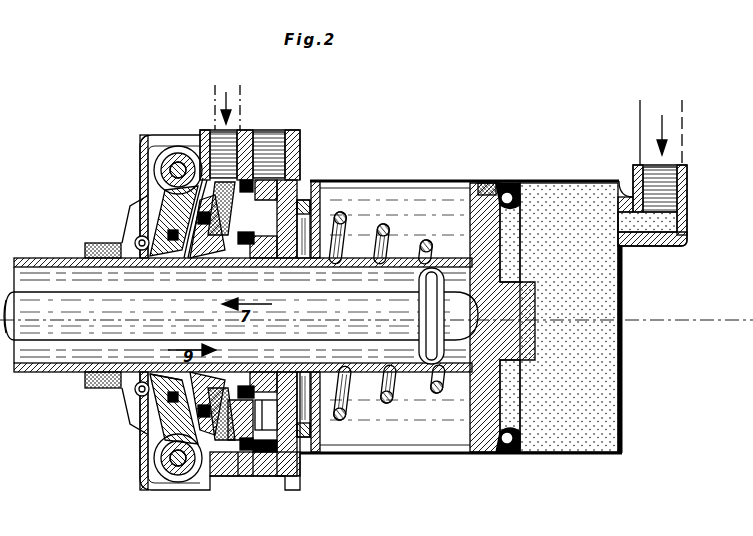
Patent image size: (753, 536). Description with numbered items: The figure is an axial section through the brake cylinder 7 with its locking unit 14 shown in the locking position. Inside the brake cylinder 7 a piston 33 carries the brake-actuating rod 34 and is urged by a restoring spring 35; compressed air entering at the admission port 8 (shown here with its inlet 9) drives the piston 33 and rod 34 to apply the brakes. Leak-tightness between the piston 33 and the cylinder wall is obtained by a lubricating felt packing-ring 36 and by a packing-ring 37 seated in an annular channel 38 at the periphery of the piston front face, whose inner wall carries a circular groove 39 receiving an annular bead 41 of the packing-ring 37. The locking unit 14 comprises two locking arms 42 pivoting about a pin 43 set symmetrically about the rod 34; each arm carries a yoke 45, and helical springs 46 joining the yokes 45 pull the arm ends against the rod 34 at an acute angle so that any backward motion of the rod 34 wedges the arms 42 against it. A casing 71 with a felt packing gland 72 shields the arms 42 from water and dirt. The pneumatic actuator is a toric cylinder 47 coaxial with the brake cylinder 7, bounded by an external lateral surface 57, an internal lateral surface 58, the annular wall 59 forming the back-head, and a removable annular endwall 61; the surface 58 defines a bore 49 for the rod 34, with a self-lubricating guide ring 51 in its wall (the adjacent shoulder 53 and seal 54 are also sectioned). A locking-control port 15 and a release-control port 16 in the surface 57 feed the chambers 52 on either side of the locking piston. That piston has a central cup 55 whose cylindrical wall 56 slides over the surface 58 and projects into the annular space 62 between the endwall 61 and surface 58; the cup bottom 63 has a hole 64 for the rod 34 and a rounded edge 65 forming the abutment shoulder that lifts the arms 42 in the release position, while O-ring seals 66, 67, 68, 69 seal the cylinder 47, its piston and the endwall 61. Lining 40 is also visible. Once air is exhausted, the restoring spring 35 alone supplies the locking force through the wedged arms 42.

The brake cylinder 7 is at (431, 170).
The admission port 8 is at (640, 164).
The inlet pipe 9 is at (632, 128).
The locking unit 14 is at (131, 155).
The locking-control air-admission port 15 is at (212, 133).
The release-control port 16 is at (278, 133).
The piston 33 is at (536, 306).
The brake-actuating rod 34 is at (58, 259).
The restoring spring 35 is at (386, 226).
The lubricating felt packing-ring 36 is at (481, 180).
The packing-ring 37 is at (514, 199).
The annular channel 38 is at (493, 180).
The circular groove 39 is at (522, 431).
The friction lining 40 is at (245, 208).
The annular bead 41 is at (518, 220).
The locking arm 42 is at (156, 214).
The pin 43 is at (176, 164).
The yoke 45 is at (136, 241).
The helical spring 46 is at (140, 302).
The cylinder 47 is at (255, 478).
The bore 49 is at (290, 260).
The guide ring 51 is at (210, 262).
The chamber 52 is at (240, 498).
The housing wall 53 is at (270, 200).
The seal 54 is at (260, 260).
The central cup 55 is at (165, 408).
The cylindrical wall 56 is at (240, 398).
The external lateral surface 57 is at (244, 478).
The internal lateral surface 58 is at (278, 410).
The annular wall 59 is at (310, 218).
The removable annular endwall 61 is at (162, 195).
The annular space 62 is at (246, 262).
The bottom 63 is at (168, 259).
The hole 64 is at (195, 262).
The rounded edge 65 is at (172, 372).
The O-ring seal 66 is at (226, 478).
The O-ring seal 67 is at (212, 382).
The O-ring seal 68 is at (262, 398).
The O-ring seal 69 is at (262, 450).
The casing 71 is at (130, 224).
The packing gland 72 is at (80, 383).